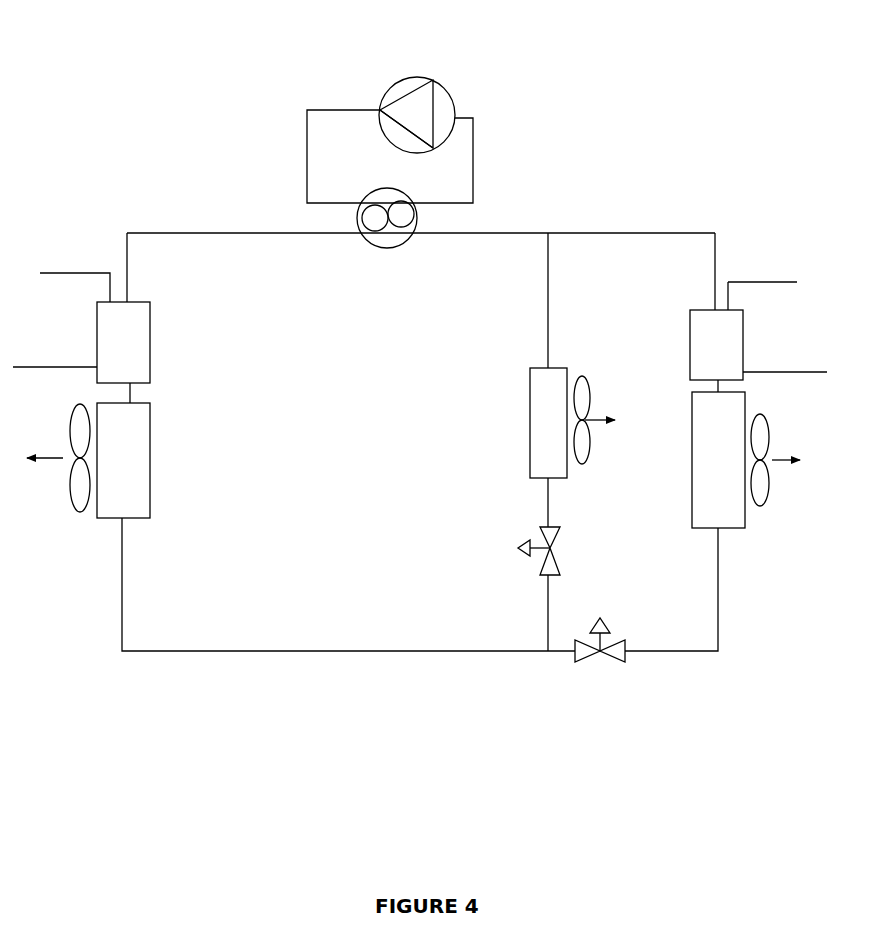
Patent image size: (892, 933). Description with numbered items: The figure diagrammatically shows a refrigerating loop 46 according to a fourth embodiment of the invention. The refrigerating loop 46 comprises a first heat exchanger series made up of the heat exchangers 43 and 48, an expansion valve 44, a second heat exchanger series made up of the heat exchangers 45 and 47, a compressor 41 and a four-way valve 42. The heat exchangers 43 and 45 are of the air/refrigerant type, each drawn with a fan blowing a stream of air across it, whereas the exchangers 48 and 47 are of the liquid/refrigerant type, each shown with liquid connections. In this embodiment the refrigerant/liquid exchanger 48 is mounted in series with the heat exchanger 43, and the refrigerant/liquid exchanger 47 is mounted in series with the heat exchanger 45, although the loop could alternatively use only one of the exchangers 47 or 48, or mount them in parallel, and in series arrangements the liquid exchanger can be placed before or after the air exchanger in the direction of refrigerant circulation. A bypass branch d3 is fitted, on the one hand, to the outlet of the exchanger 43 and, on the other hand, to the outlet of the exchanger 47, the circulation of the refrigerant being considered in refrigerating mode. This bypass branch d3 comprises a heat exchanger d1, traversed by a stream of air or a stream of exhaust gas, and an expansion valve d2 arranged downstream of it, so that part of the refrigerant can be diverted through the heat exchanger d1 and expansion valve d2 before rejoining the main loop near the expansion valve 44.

The compressor 41 is at (462, 97).
The four-way valve 42 is at (400, 255).
The heat exchanger 43 is at (157, 515).
The expansion valve 44 is at (627, 668).
The heat exchanger 45 is at (742, 538).
The refrigerating loop 46 is at (618, 222).
The heat exchanger 47 is at (747, 352).
The heat exchanger 48 is at (157, 367).
The heat exchanger d1 is at (565, 360).
The expansion valve d2 is at (565, 548).
The bypass branch d3 is at (540, 625).